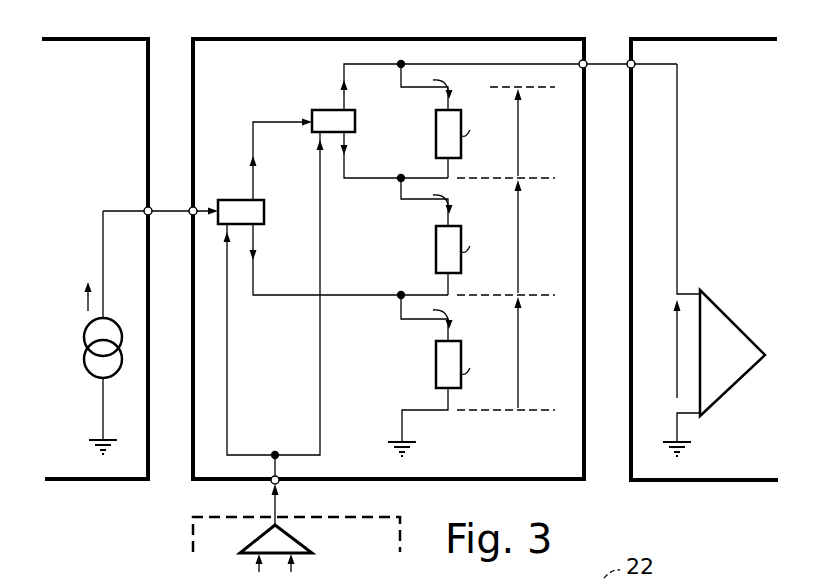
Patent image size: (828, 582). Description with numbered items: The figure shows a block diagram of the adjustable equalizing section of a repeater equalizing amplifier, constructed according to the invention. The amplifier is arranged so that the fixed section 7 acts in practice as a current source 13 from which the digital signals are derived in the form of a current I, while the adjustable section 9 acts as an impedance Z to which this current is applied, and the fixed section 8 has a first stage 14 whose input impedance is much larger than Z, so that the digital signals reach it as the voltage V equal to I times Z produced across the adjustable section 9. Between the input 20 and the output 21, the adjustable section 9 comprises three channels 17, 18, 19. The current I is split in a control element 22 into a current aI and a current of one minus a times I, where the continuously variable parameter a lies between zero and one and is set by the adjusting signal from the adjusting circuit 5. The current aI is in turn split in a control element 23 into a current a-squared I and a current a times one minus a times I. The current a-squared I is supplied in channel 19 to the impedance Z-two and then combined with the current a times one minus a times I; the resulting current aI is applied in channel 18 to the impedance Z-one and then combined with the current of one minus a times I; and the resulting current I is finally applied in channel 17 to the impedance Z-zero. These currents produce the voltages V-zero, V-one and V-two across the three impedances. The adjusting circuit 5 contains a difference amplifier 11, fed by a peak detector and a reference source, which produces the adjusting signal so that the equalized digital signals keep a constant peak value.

The fixed section 7 is at (82, 38).
The fixed section 8 is at (704, 38).
The adjustable section 9 is at (366, 38).
The current source 13 is at (87, 360).
The first stage 14 is at (738, 327).
The input 20 is at (190, 207).
The output 21 is at (587, 61).
The control element 22 is at (264, 212).
The control element 23 is at (355, 122).
The channel 17 is at (459, 375).
The channel 18 is at (463, 236).
The channel 19 is at (472, 121).
The adjusting circuit 5 is at (343, 516).
The difference amplifier 11 is at (304, 542).